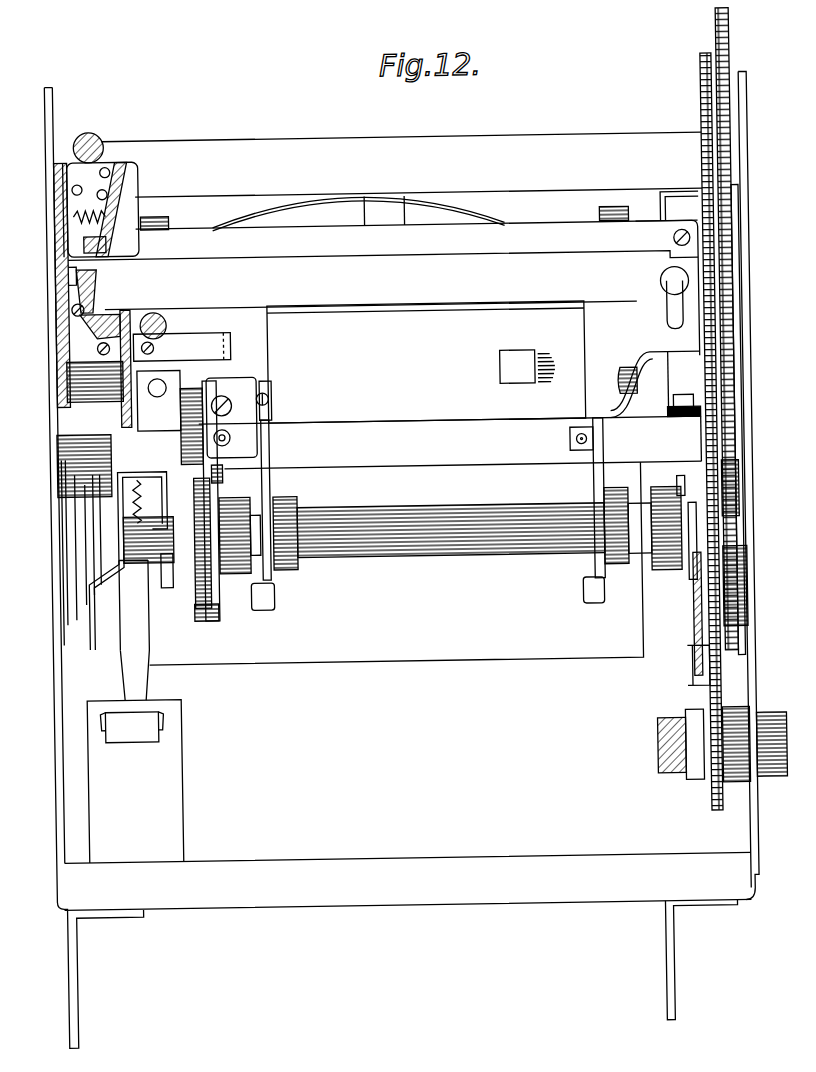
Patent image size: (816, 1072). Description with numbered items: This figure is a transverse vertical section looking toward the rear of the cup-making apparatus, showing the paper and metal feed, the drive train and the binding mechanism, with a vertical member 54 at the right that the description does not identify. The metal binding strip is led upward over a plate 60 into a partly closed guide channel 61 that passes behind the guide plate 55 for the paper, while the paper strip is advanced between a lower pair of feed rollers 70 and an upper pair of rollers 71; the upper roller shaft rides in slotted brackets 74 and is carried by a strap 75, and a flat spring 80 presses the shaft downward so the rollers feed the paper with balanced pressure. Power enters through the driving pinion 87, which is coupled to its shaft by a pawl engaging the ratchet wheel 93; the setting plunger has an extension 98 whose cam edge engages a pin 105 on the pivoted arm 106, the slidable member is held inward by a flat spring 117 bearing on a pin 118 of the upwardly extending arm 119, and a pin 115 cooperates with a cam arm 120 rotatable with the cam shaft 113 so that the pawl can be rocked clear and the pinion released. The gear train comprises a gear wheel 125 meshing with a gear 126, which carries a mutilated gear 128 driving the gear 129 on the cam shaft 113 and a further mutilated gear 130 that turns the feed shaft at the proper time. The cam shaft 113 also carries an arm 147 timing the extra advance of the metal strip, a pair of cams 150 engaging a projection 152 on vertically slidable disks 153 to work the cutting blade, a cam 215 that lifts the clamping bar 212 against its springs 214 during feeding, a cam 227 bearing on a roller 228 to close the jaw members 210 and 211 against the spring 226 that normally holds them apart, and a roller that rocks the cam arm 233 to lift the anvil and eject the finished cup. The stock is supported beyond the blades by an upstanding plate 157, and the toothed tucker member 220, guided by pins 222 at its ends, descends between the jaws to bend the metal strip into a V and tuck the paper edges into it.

The frame side plate 54 is at (752, 450).
The guide plate 55 is at (366, 661).
The plate 60 is at (160, 806).
The guide channel 61 is at (147, 690).
The feed rollers 70 is at (631, 390).
The rollers 71 is at (175, 220).
The slotted brackets 74 is at (672, 214).
The strap 75 is at (405, 214).
The flat spring 80 is at (300, 219).
The driving pinion 87 is at (717, 815).
The ratchet wheel 93 is at (692, 785).
The extension 98 is at (692, 615).
The pin 105 is at (690, 668).
The arm 106 is at (700, 688).
The cam shaft 113 is at (456, 557).
The pin 115 is at (665, 518).
The flat spring 117 is at (685, 398).
The pin 118 is at (636, 439).
The arm 119 is at (700, 342).
The cam arm 120 is at (684, 578).
The gear wheel 125 is at (746, 590).
The gear 126 is at (720, 256).
The mutilated gear 128 is at (707, 96).
The gear 129 is at (740, 512).
The mutilated gear 130 is at (737, 55).
The arm 147 is at (167, 584).
The cams 150 is at (274, 590).
The projection 152 is at (423, 609).
The slidable disks 153 is at (290, 512).
The upstanding plate 157 is at (426, 362).
The jaw member 210 is at (168, 318).
The jaw member 211 is at (78, 322).
The clamping bar 212 is at (115, 312).
The springs 214 is at (75, 268).
The cam 215 is at (116, 650).
The tucker member 220 is at (101, 284).
The pins 222 is at (118, 168).
The spring 226 is at (203, 425).
The cam 227 is at (232, 574).
The roller 228 is at (222, 475).
The cam arm 233 is at (88, 640).